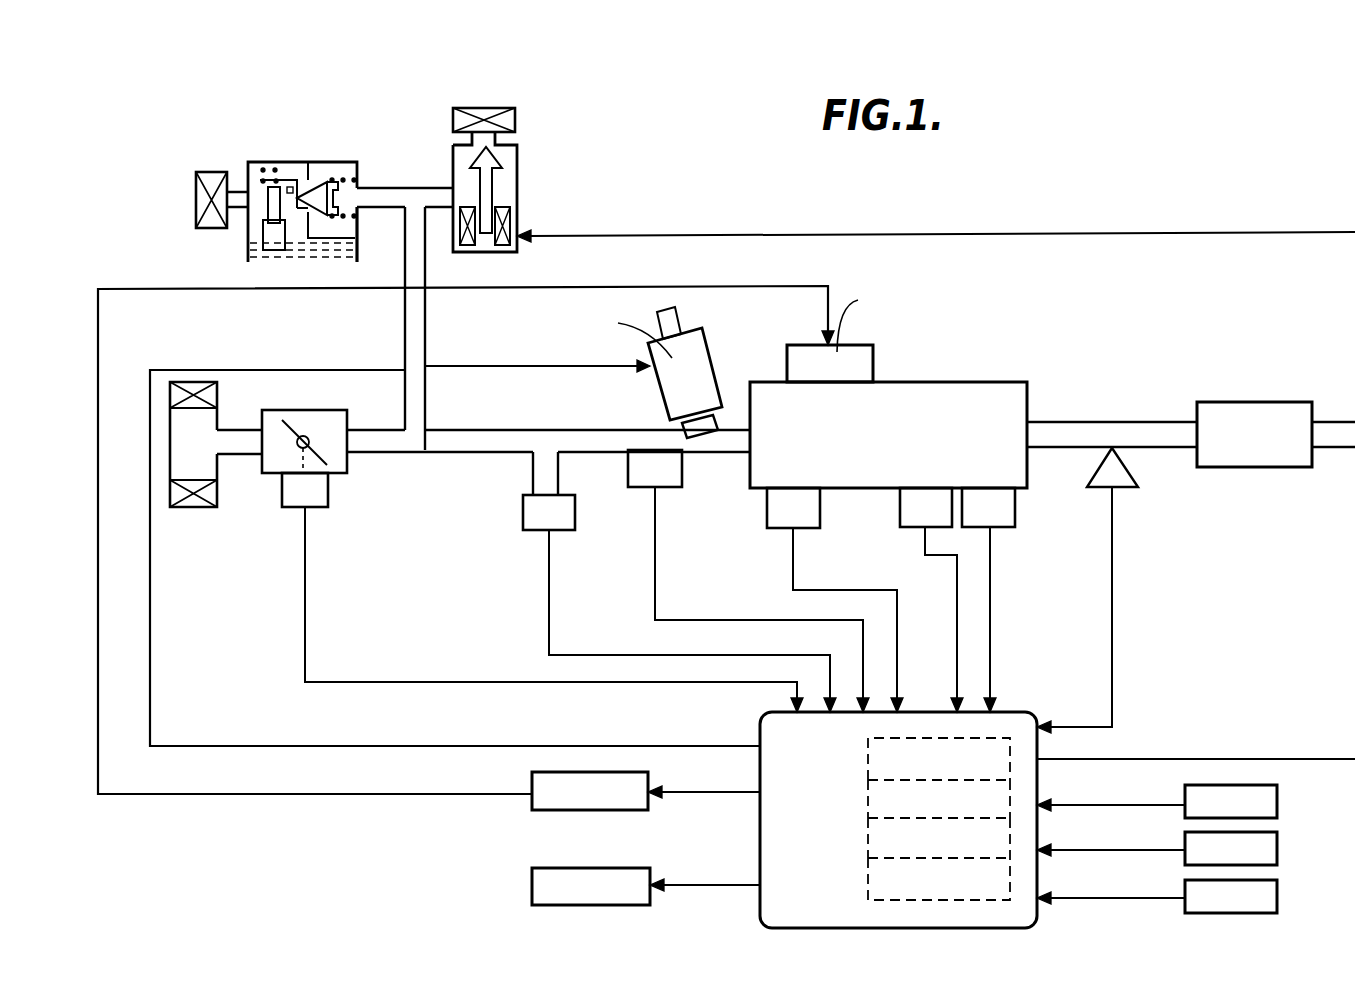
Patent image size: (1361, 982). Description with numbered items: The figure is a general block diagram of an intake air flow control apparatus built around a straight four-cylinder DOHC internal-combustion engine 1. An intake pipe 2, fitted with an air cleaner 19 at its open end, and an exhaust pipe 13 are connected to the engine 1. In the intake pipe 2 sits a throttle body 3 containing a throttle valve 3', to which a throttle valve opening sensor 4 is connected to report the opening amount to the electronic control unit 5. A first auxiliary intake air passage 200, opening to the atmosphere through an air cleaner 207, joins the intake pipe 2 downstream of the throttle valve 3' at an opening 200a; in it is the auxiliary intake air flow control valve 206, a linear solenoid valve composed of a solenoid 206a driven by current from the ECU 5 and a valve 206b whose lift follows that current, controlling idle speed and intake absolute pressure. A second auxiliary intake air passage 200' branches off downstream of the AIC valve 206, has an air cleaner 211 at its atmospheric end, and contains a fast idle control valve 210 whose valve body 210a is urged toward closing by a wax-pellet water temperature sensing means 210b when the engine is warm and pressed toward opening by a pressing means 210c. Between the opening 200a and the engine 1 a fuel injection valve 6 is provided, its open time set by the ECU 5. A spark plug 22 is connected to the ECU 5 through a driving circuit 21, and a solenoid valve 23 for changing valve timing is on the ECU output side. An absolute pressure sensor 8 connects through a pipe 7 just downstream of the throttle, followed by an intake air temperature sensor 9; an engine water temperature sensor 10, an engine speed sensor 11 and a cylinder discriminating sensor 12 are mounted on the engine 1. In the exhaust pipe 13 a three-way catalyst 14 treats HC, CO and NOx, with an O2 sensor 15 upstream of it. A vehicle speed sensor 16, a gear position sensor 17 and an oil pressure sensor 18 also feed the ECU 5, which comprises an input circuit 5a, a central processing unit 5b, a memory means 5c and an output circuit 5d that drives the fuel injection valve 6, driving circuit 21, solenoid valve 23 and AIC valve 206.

The internal-combustion engine 1 is at (965, 380).
The intake pipe 2 is at (590, 428).
The throttle body 3 is at (325, 426).
The throttle valve 3' is at (304, 426).
The throttle valve opening sensor 4 is at (328, 490).
The electronic control unit 5 is at (924, 794).
The input circuit 5a is at (1005, 757).
The central processing unit 5b is at (1005, 795).
The memory means 5c is at (1007, 838).
The output circuit 5d is at (1007, 878).
The fuel injection valve 6 is at (712, 353).
The pipe 7 is at (558, 473).
The absolute pressure sensor 8 is at (575, 511).
The intake air temperature sensor 9 is at (683, 466).
The engine water temperature sensor 10 is at (767, 517).
The engine speed sensor 11 is at (900, 513).
The cylinder discriminating sensor 12 is at (1016, 513).
The exhaust pipe 13 is at (1098, 422).
The three-way catalyst 14 is at (1253, 402).
The O2 sensor 15 is at (1138, 481).
The vehicle speed sensor 16 is at (1277, 894).
The gear position sensor 17 is at (1277, 846).
The oil pressure sensor 18 is at (1277, 796).
The air cleaner 19 is at (217, 468).
The driving circuit 21 is at (532, 778).
The spark plug 22 is at (873, 353).
The solenoid valve 23 is at (532, 873).
The first auxiliary intake air passage 200 is at (405, 279).
The second auxiliary intake air passage 200' is at (366, 244).
The opening of the first auxiliary intake air passage 200a is at (417, 428).
The auxiliary intake air flow control valve 206 is at (904, 171).
The solenoid 206a is at (516, 222).
The valve 206b is at (488, 195).
The air cleaner 207 is at (517, 112).
The fast idle control valve 210 is at (289, 196).
The valve body 210a is at (327, 177).
The water temperature sensing means 210b is at (258, 214).
The pressing means 210c is at (263, 178).
The air cleaner 211 is at (208, 172).